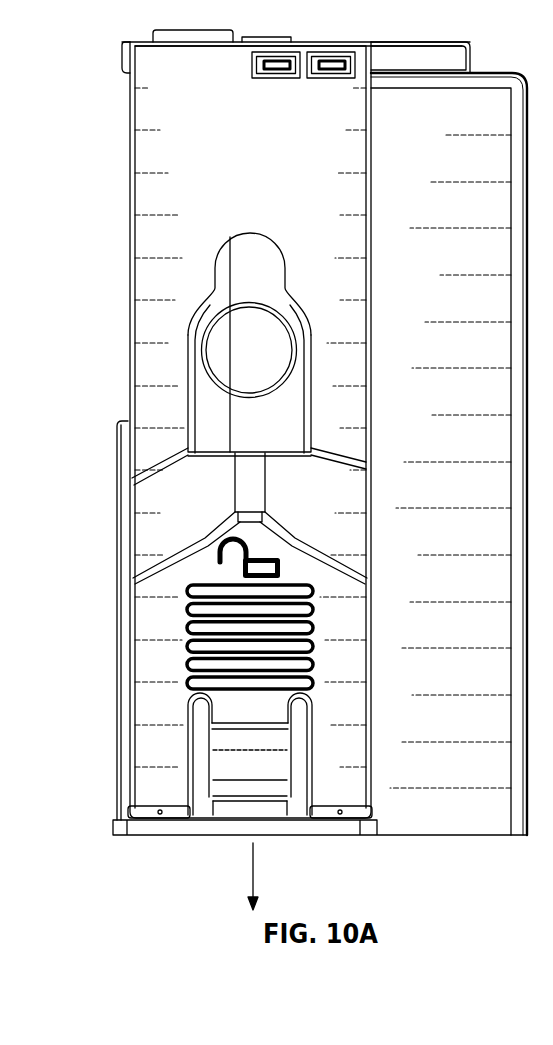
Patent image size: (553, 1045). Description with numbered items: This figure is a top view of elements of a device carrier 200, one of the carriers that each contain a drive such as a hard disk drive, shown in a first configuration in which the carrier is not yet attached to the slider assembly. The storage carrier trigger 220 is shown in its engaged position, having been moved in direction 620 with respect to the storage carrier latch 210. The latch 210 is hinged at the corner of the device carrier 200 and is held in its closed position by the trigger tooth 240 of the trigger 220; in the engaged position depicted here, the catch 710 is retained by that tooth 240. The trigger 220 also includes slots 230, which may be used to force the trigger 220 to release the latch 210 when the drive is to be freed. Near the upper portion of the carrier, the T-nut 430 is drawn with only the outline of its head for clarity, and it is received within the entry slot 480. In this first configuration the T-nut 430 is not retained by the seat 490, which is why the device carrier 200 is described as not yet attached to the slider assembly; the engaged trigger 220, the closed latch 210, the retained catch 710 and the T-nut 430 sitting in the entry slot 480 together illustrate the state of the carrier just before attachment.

The device carrier 200 is at (468, 451).
The storage carrier latch 210 is at (280, 802).
The storage carrier trigger 220 is at (155, 590).
The slots 230 is at (200, 708).
The trigger tooth 240 is at (245, 737).
The T-nut 430 is at (240, 397).
The entry slot 480 is at (202, 382).
The seat 490 is at (238, 237).
The direction 620 is at (253, 883).
The catch 710 is at (232, 770).